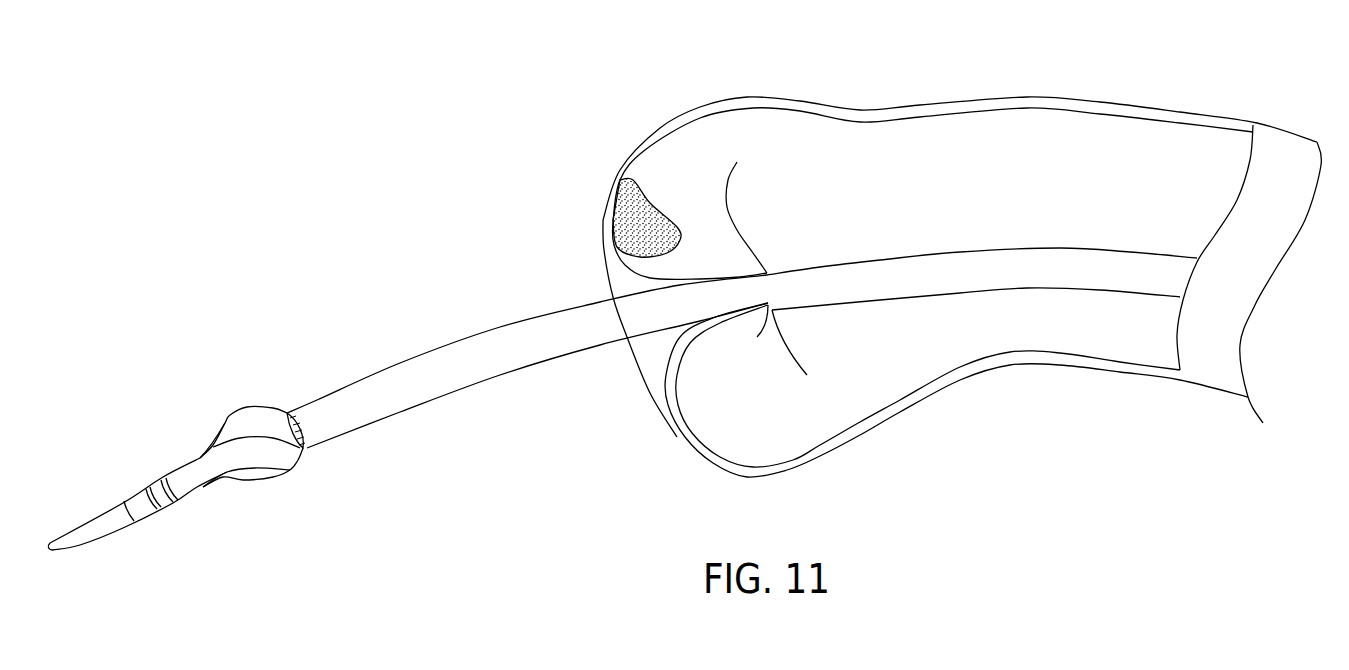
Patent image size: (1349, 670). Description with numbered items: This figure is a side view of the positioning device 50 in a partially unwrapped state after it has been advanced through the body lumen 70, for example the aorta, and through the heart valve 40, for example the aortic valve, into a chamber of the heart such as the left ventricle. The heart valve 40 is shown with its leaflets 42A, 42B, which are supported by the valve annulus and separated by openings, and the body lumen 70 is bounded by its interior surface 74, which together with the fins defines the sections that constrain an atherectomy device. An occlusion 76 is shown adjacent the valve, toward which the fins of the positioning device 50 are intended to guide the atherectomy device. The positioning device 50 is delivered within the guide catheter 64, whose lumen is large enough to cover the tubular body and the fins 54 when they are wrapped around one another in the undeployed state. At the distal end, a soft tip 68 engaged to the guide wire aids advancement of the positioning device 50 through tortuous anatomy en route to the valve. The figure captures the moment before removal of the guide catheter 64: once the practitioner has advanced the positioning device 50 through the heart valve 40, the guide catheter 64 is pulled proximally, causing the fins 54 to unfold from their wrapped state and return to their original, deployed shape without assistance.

The heart valve 40 is at (673, 428).
The leaflet 42A is at (613, 185).
The leaflet 42B is at (663, 393).
The positioning device 50 is at (378, 273).
The fins 54 is at (242, 390).
The guide catheter 64 is at (402, 363).
The tip 68 is at (77, 547).
The body lumen 70 is at (1082, 97).
The interior surface 74 is at (1057, 352).
The occlusion 76 is at (622, 227).